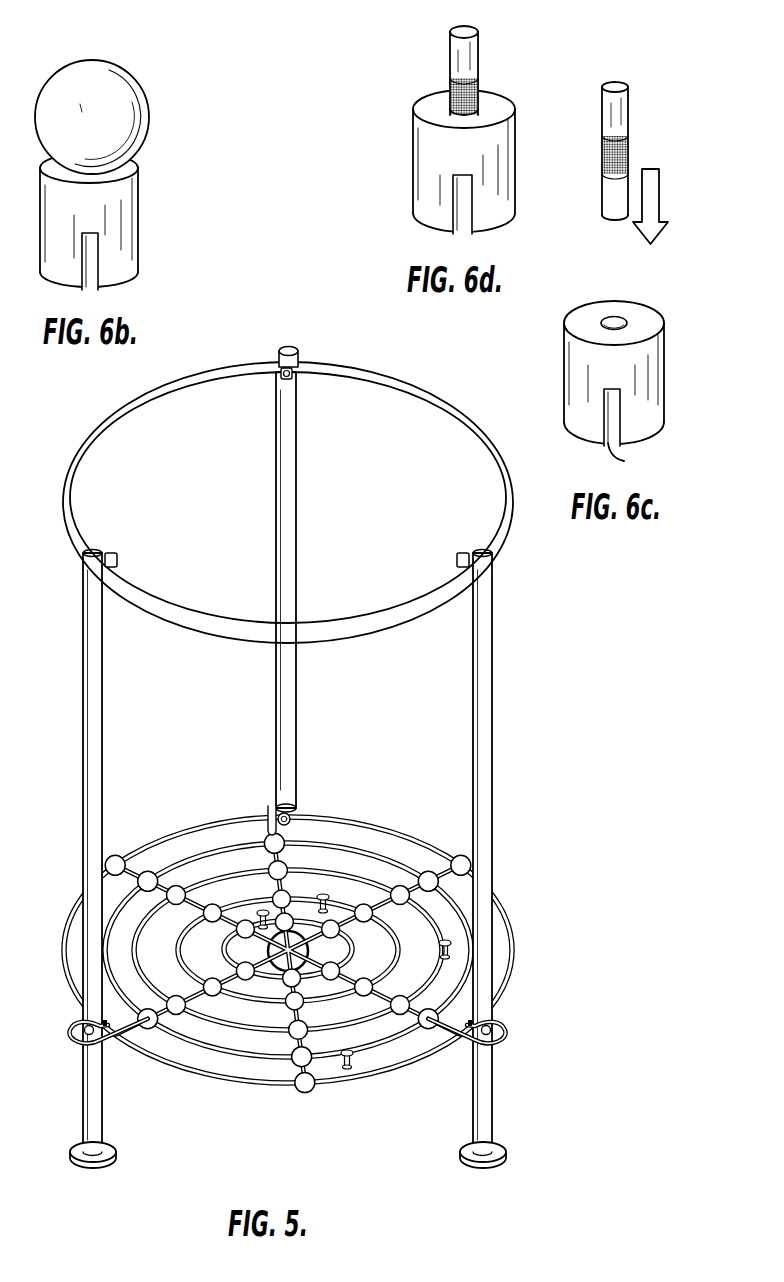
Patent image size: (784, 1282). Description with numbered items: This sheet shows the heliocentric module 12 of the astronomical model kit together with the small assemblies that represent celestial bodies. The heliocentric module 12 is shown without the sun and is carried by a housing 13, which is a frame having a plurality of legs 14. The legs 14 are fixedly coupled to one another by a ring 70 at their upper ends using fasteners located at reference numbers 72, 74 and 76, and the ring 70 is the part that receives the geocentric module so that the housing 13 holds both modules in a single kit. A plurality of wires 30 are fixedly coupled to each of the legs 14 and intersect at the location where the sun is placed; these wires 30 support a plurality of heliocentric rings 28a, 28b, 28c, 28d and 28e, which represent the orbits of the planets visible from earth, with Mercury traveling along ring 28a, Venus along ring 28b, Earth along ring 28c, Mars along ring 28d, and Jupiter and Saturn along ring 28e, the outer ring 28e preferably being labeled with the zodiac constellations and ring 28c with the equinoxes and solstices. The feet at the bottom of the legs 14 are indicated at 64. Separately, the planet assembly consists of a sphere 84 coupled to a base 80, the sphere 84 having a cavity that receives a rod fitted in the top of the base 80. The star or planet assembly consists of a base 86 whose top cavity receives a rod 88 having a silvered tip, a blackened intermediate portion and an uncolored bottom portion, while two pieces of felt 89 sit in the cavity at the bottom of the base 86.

In FIG. 5, the heliocentric module 12 is at (309, 922).
In FIG. 5, the housing 13 is at (434, 384).
In FIG. 5, the legs 14 is at (87, 705).
In FIG. 5, the heliocentric ring 28a is at (366, 928).
In FIG. 5, the heliocentric ring 28b is at (400, 925).
In FIG. 5, the heliocentric ring 28c is at (322, 867).
In FIG. 5, the heliocentric ring 28d is at (377, 855).
In FIG. 5, the heliocentric ring 28e is at (428, 843).
In FIG. 5, the wires 30 is at (270, 812).
In FIG. 5, the feet 64 is at (505, 1170).
In FIG. 5, the ring 70 is at (240, 370).
In FIG. 5, the fastener 72 is at (273, 375).
In FIG. 5, the fastener 74 is at (472, 552).
In FIG. 5, the fastener 76 is at (101, 552).
In FIG. 6B, the base 80 is at (138, 232).
In FIG. 6B, the sphere 84 is at (147, 101).
In FIG. 6D, the base 86 is at (515, 145).
In FIG. 6C, the base 86 is at (664, 360).
In FIG. 6D, the rod 88 is at (478, 92).
In FIG. 6C, the rod 88 is at (628, 150).
In FIG. 6C, the felt 89 is at (624, 461).